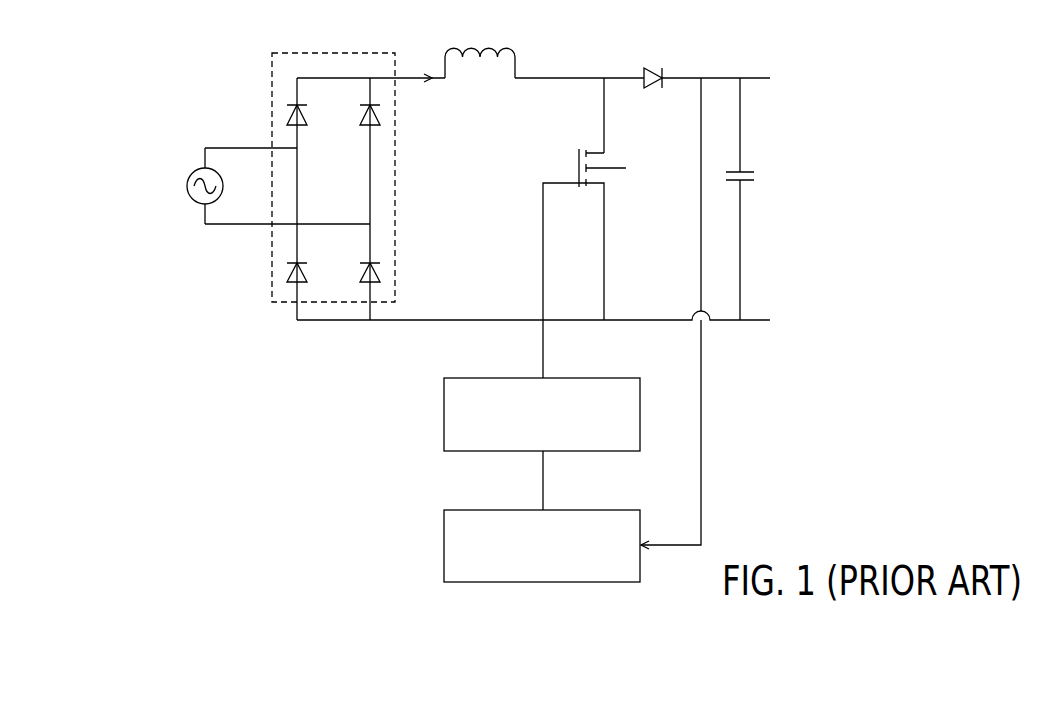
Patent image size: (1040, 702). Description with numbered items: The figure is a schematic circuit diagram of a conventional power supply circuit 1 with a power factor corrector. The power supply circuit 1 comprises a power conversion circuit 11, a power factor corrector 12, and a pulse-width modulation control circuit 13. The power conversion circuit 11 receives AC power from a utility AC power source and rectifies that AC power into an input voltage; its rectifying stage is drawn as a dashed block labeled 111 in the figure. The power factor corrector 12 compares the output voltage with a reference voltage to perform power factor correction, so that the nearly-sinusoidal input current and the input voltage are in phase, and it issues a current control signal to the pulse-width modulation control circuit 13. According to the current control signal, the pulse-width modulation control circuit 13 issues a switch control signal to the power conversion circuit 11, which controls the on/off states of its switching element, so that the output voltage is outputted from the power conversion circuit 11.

The power supply circuit 1 is at (870, 56).
The bridge rectifier 111 is at (335, 53).
The power conversion circuit 11 is at (684, 56).
The pulse-width modulation control circuit 13 is at (444, 412).
The power factor corrector 12 is at (444, 545).